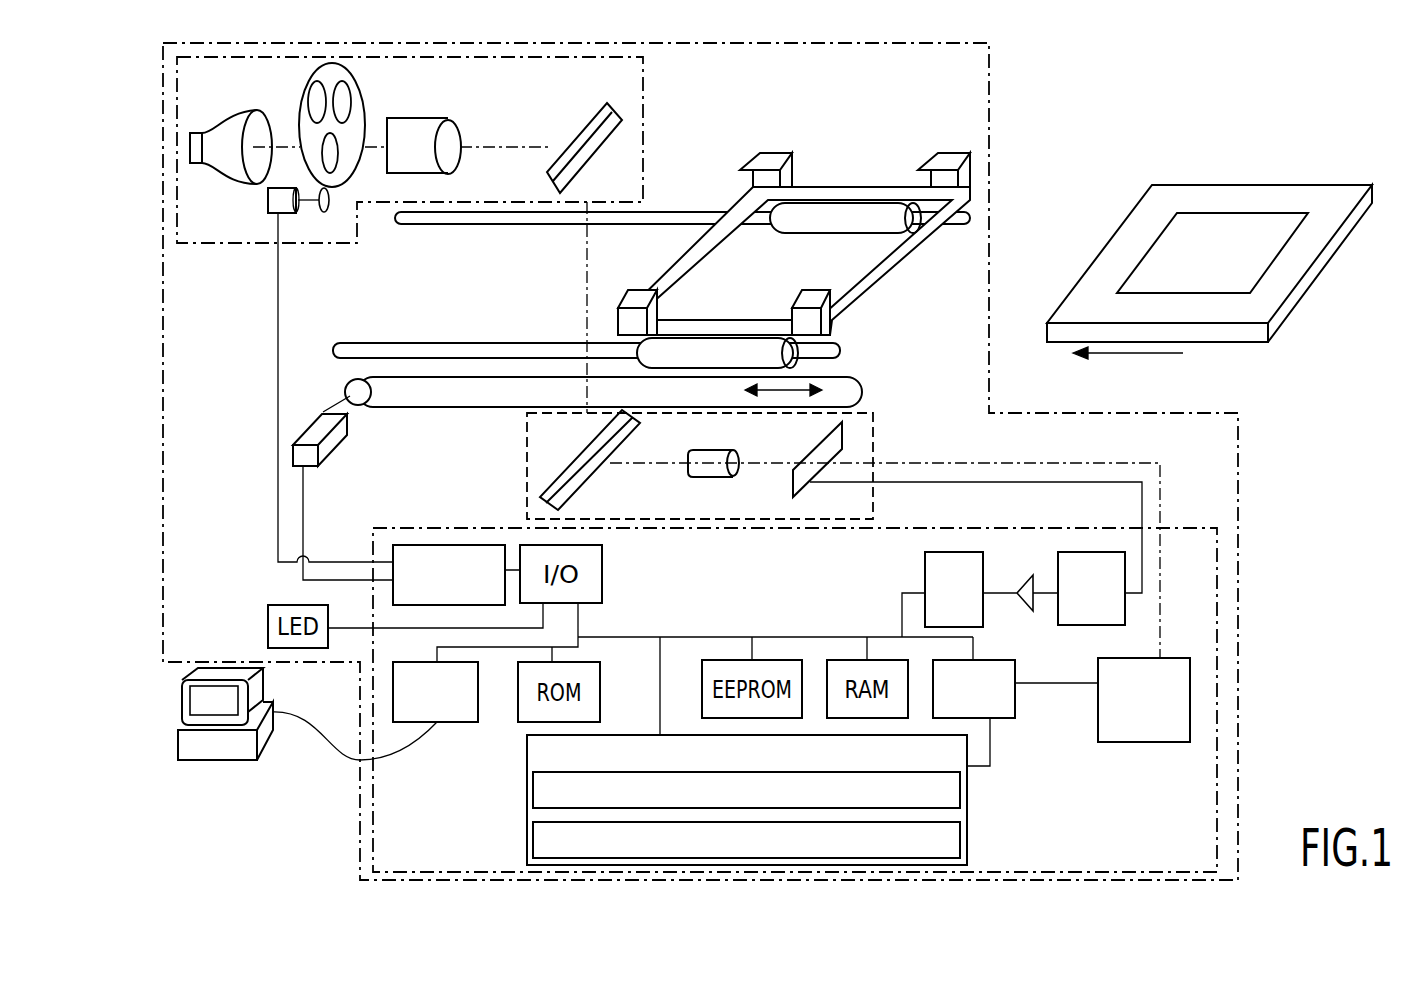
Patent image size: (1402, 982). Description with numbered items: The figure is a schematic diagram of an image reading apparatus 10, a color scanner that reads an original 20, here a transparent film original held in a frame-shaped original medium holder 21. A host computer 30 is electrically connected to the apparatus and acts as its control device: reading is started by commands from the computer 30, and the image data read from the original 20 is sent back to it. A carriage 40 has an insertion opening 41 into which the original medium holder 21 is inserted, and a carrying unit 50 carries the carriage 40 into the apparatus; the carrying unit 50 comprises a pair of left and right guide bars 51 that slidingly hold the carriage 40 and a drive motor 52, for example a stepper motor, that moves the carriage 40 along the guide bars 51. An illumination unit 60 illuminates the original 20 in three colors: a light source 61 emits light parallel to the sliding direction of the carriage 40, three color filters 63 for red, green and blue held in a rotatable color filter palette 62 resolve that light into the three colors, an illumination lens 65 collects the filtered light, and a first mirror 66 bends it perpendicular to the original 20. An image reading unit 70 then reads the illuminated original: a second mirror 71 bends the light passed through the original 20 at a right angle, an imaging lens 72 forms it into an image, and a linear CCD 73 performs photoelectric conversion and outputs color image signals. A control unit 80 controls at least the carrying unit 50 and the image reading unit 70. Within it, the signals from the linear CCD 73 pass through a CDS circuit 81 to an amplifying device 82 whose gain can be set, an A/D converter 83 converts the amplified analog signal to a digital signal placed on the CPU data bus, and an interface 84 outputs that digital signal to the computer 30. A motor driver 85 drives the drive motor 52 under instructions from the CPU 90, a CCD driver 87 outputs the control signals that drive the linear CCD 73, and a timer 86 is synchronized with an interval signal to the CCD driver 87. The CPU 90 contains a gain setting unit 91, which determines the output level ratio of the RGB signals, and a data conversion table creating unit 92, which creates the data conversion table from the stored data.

The image reading apparatus 10 is at (990, 127).
The original 20 is at (1217, 223).
The original medium holder 21 is at (1335, 200).
The computer 30 is at (243, 760).
The carriage 40 is at (847, 187).
The insertion opening 41 is at (983, 168).
The carrying unit 50 is at (231, 293).
The guide bars 51 is at (453, 217).
The drive motor 52 is at (310, 437).
The illumination unit 60 is at (177, 160).
The light source 61 is at (227, 167).
The color filter palette 62 is at (297, 112).
The color filters 63 is at (347, 103).
The illumination lens 65 is at (433, 150).
The first mirror 66 is at (600, 127).
The image reading unit 70 is at (870, 412).
The second mirror 71 is at (580, 493).
The imaging lens 72 is at (712, 477).
The linear CCD 73 is at (810, 497).
The control unit 80 is at (1222, 670).
The Correlation Double Sampling (CDS) circuit 81 is at (1123, 550).
The amplifying device 82 is at (1030, 578).
The A/D converter 83 is at (955, 552).
The interface 84 is at (447, 722).
The motor driver 85 is at (447, 545).
The timer 86 is at (1017, 666).
The CCD driver 87 is at (1142, 742).
The CPU 90 is at (1068, 740).
The gain setting unit 91 is at (967, 787).
The data conversion table creating unit 92 is at (967, 832).